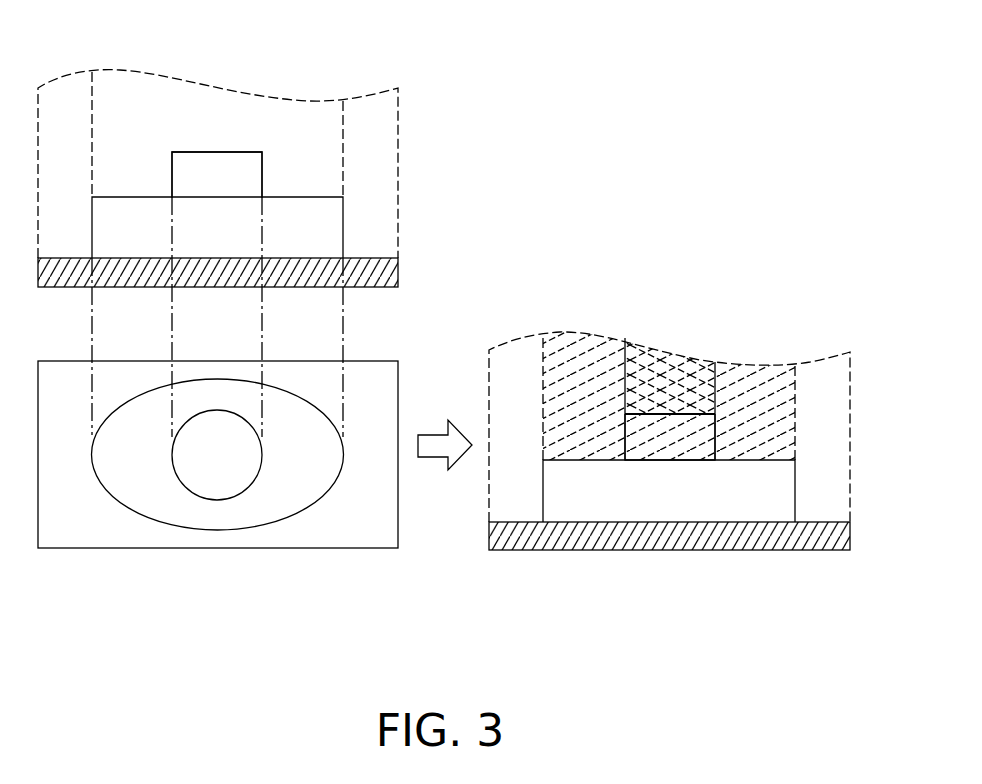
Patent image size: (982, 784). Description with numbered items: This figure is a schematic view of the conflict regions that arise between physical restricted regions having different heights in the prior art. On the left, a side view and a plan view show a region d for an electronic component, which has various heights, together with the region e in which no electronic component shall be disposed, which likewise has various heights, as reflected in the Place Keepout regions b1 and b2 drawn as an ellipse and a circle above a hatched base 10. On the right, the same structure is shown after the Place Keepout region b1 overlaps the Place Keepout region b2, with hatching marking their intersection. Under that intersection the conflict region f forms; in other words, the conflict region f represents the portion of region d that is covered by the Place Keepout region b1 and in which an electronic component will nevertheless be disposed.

The region in which any electronic component shall not be disposed e is at (199, 105).
The region for an electronic component d is at (222, 215).
The substrate 10 is at (387, 273).
The Place Keepout region b1 is at (193, 530).
The Place Keepout region b2 is at (223, 500).
The conflict region f is at (670, 442).